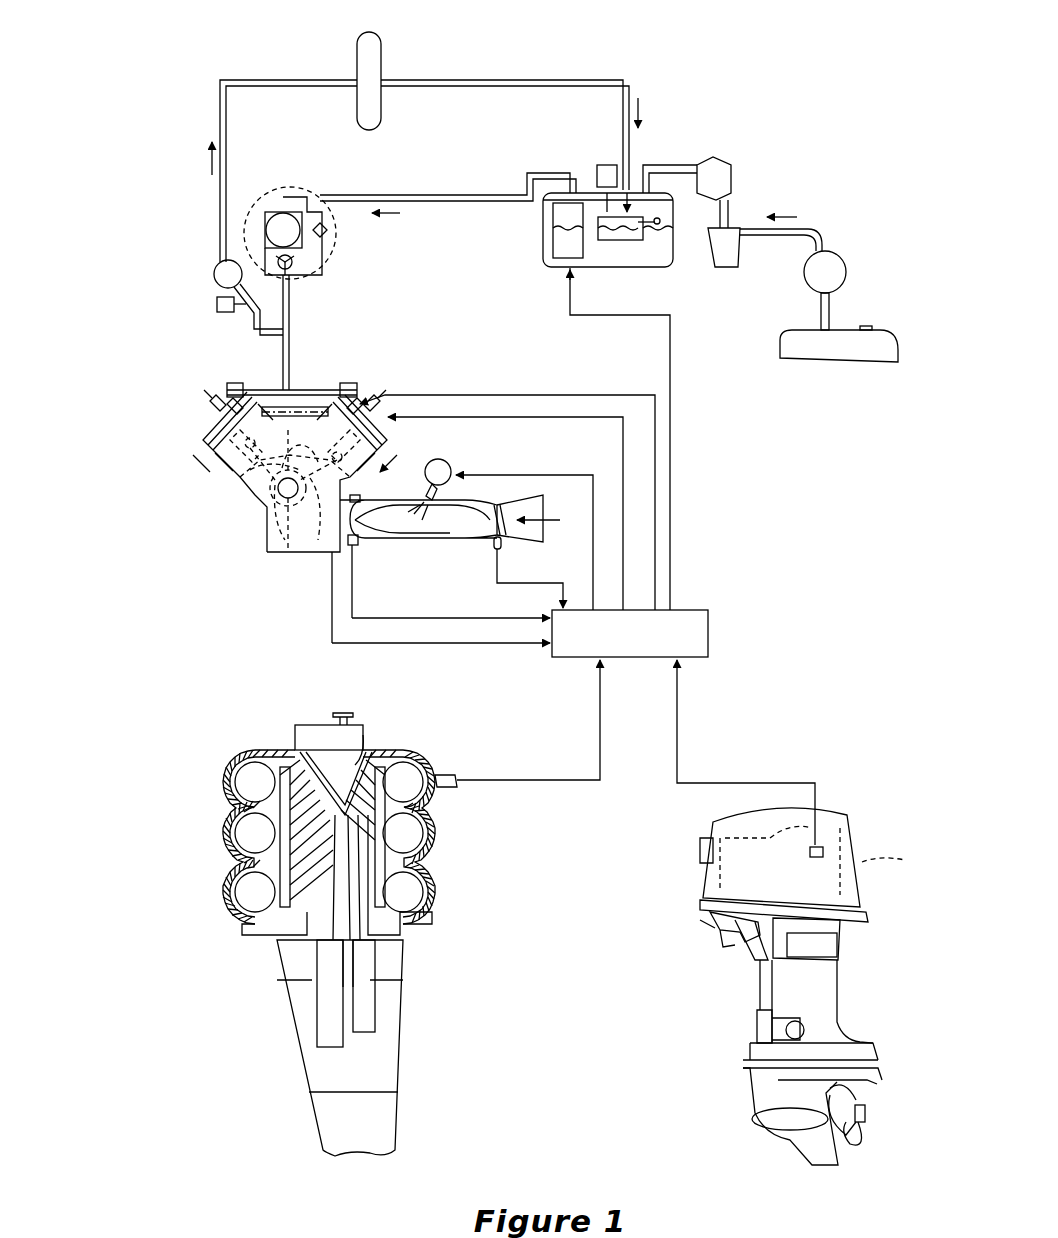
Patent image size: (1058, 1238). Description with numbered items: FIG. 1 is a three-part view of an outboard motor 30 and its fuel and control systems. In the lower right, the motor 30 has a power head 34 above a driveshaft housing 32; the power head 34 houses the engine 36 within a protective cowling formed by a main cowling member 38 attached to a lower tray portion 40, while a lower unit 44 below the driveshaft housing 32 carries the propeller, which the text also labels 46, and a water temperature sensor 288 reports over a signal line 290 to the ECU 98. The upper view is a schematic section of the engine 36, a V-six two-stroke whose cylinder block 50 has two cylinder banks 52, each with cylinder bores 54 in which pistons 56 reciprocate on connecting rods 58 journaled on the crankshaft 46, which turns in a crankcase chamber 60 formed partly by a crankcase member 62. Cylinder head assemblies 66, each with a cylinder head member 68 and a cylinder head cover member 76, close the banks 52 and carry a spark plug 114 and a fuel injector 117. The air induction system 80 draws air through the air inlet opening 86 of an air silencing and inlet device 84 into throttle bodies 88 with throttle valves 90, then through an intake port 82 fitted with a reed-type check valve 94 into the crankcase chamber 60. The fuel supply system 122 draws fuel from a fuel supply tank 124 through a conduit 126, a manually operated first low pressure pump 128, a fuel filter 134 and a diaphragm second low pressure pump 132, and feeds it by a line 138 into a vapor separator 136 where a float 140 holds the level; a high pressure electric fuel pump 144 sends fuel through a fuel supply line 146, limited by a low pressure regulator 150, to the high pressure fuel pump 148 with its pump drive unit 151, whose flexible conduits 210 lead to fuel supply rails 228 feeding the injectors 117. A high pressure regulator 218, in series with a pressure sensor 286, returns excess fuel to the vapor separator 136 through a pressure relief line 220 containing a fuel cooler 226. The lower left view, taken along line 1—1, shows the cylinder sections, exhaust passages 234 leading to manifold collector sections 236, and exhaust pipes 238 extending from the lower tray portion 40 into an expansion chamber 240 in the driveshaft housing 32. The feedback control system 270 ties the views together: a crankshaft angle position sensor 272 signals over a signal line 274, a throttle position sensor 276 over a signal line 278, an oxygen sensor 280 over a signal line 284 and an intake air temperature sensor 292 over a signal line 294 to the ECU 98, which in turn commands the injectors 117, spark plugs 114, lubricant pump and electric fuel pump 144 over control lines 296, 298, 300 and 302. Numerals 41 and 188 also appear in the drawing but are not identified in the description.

The section line 1 is at (295, 476).
The outboard motor 30 is at (838, 775).
The driveshaft housing 32 is at (402, 1070).
The power head 34 is at (675, 810).
The internal combustion engine 36 is at (415, 362).
The main cowling member 38 is at (700, 860).
The lower tray portion 40 is at (828, 920).
The engine 41 is at (380, 486).
The lower unit 44 is at (748, 1092).
The crankshaft 46 is at (295, 560).
The cylinder block 50 is at (235, 468).
The cylinder banks 52 is at (262, 520).
The cylinder bores 54 is at (232, 770).
The pistons 56 is at (250, 450).
The connecting rods 58 is at (290, 508).
The crankcase chamber 60 is at (300, 570).
The crankcase member 62 is at (290, 560).
The cylinder head assemblies 66 is at (152, 460).
The cylinder head member 68 is at (200, 445).
The cylinder head cover member 76 is at (208, 405).
The air induction system 80 is at (462, 494).
The intake port 82 is at (352, 620).
The air silencing and inlet device 84 is at (522, 508).
The air inlet opening 86 is at (445, 462).
The throttle bodies 88 is at (440, 540).
The throttle valve 90 is at (495, 528).
The reed-type check valve 94 is at (372, 512).
The ECU 98 is at (710, 635).
The spark plug 114 is at (330, 412).
The fuel injector 117 is at (352, 394).
The fuel supply system 122 is at (628, 48).
The fuel supply tank 124 is at (838, 352).
The conduit 126 is at (810, 228).
The first low pressure pump 128 is at (838, 254).
The second low pressure pump 132 is at (735, 175).
The fuel filter 134 is at (738, 252).
The vapor separator 136 is at (673, 252).
The line 138 is at (672, 163).
The float 140 is at (630, 240).
The high pressure electric fuel pump 144 is at (573, 240).
The fuel supply line 146 is at (405, 195).
The high pressure fuel pump 148 is at (276, 188).
The low pressure regulator 150 is at (607, 165).
The pump drive unit 151 is at (365, 735).
The fuel supply pipe 188 is at (283, 300).
The flexible conduits 210 is at (343, 725).
The high pressure regulator 218 is at (214, 272).
The pressure relief line 220 is at (520, 78).
The fuel cooler 226 is at (372, 56).
The fuel supply rails 228 is at (235, 383).
The exhaust passage 234 is at (237, 812).
The manifold collector sections 236 is at (330, 945).
The exhaust pipes 238 is at (318, 1008).
The expansion chamber 240 is at (340, 1088).
The feedback control system 270 is at (733, 545).
The crankshaft angle position sensor 272 is at (328, 570).
The signal line 274 is at (470, 645).
The throttle position sensor 276 is at (545, 610).
The signal line 278 is at (560, 605).
The oxygen sensor 280 is at (460, 777).
The signal line 284 is at (600, 782).
The pressure sensor 286 is at (217, 304).
The water temperature sensor 288 is at (825, 852).
The signal line 290 is at (685, 730).
The intake air temperature sensor 292 is at (356, 550).
The signal line 294 is at (405, 620).
The control line 296 is at (548, 393).
The control line 298 is at (570, 418).
The control line 300 is at (545, 473).
The control line 302 is at (672, 440).